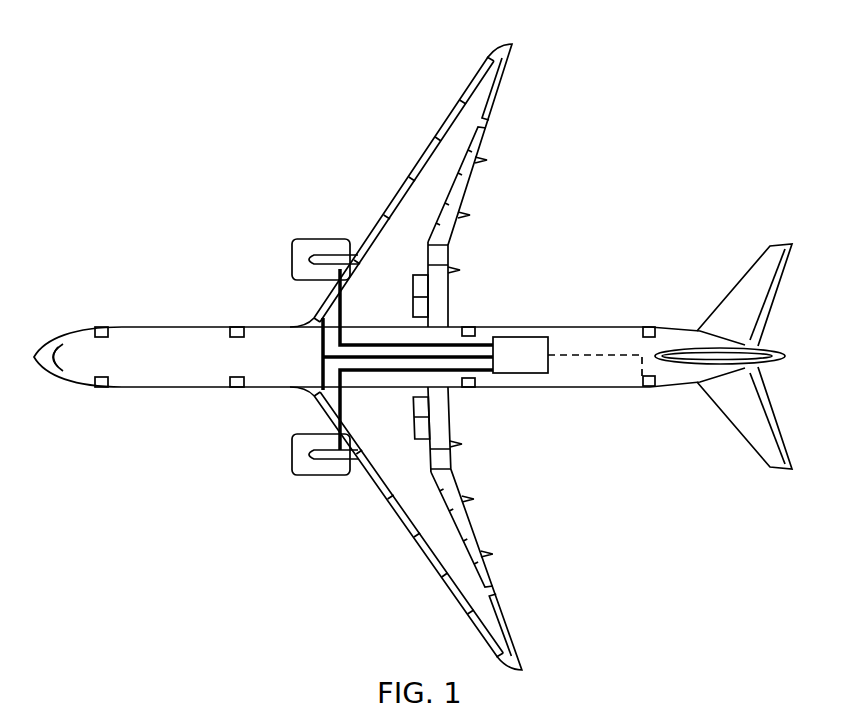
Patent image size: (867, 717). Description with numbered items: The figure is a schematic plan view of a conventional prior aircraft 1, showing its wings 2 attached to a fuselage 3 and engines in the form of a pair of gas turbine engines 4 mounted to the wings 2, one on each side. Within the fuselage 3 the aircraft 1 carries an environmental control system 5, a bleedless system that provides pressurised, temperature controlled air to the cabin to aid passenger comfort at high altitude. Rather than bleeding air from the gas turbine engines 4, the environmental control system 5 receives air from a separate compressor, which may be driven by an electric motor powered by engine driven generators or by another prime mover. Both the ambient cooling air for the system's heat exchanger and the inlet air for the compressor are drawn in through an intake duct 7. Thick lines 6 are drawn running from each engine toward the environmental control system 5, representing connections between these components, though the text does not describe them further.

The aircraft 1 is at (701, 149).
The wings 2 is at (433, 176).
The fuselage 3 is at (163, 343).
The gas turbine engines 4 is at (309, 238).
The environmental control system 5 is at (520, 337).
The engine connection line 6 is at (325, 313).
The intake duct 7 is at (318, 353).